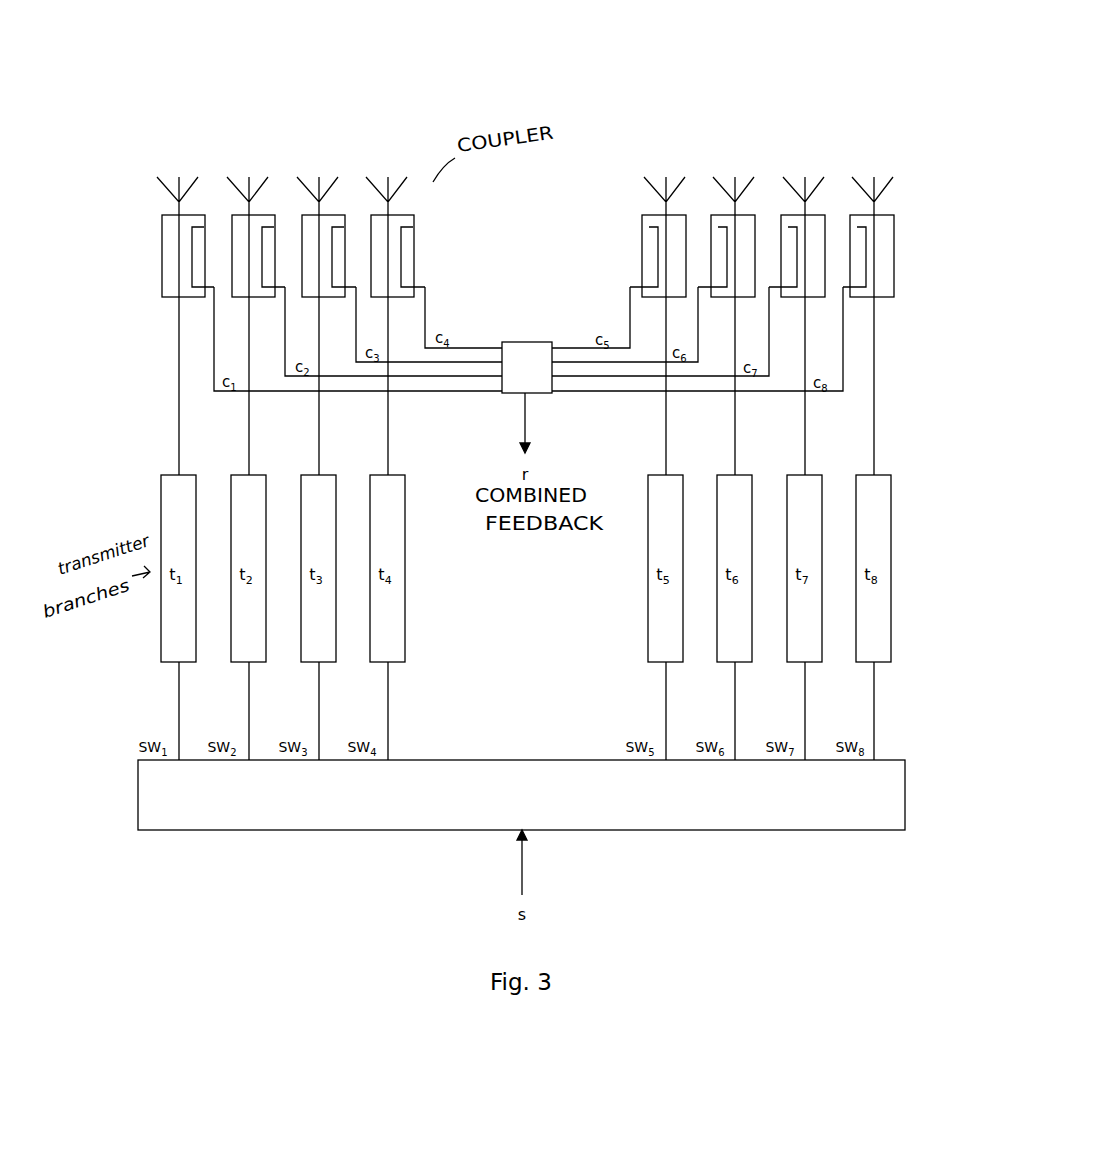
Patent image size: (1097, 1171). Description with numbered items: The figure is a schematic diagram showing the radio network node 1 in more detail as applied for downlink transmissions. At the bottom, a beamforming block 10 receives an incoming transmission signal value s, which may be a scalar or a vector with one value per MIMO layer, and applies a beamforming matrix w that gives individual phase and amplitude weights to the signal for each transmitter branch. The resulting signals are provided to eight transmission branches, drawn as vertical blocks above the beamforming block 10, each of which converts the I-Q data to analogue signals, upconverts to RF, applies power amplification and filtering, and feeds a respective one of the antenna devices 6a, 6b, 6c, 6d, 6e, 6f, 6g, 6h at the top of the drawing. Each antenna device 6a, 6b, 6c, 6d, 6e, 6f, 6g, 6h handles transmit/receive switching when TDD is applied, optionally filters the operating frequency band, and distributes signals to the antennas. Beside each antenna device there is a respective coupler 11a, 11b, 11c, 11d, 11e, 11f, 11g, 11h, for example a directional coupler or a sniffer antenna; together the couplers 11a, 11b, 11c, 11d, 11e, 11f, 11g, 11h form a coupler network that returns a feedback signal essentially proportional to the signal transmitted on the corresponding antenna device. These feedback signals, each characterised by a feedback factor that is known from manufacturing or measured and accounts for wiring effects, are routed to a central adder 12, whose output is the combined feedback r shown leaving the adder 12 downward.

The radio network node 1 is at (813, 72).
The antenna device 6a is at (169, 186).
The antenna device 6b is at (239, 186).
The antenna device 6c is at (309, 186).
The antenna device 6d is at (378, 186).
The antenna device 6e is at (656, 186).
The antenna device 6f is at (725, 186).
The antenna device 6g is at (795, 186).
The antenna device 6h is at (864, 186).
The beamforming block 10 is at (783, 830).
The coupler 11a is at (193, 242).
The coupler 11b is at (263, 242).
The coupler 11c is at (333, 242).
The coupler 11d is at (402, 242).
The coupler 11e is at (652, 242).
The coupler 11f is at (727, 243).
The coupler 11g is at (797, 243).
The coupler 11h is at (866, 243).
The adder 12 is at (512, 340).